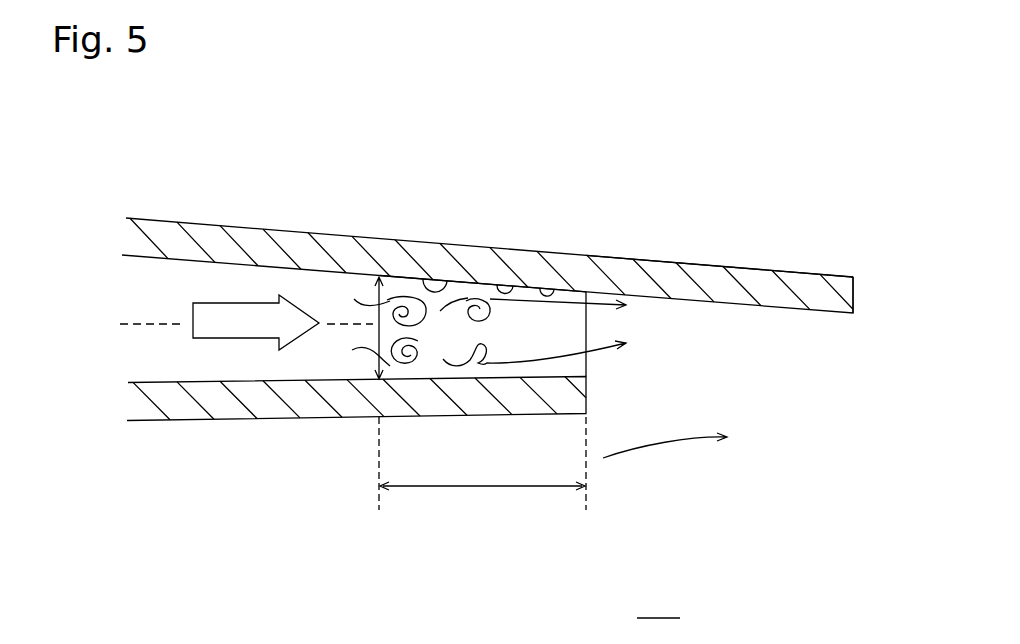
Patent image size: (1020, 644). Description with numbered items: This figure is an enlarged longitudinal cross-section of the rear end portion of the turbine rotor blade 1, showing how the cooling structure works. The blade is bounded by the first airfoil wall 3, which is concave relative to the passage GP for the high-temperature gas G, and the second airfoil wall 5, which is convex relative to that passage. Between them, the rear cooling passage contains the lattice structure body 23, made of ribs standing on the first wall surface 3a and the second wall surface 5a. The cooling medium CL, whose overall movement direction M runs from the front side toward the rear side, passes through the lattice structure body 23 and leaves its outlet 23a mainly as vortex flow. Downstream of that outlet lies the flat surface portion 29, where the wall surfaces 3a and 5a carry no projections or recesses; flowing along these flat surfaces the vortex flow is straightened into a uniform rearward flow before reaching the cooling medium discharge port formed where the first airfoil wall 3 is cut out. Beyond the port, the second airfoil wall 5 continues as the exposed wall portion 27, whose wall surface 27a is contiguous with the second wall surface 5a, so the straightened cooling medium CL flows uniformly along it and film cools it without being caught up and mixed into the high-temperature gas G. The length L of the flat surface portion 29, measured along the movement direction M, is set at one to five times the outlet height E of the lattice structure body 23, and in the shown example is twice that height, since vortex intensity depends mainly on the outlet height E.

The turbine rotor blade 1 is at (174, 191).
The first airfoil wall 3 is at (280, 421).
The first wall surface 3a is at (540, 373).
The second airfoil wall 5 is at (217, 224).
The second wall surface 5a is at (513, 290).
The lattice structure body 23 is at (198, 362).
The outlet of the lattice structure body 23a is at (373, 365).
The exposed wall portion 27 is at (665, 261).
The wall surface of the exposed wall portion 27a is at (820, 313).
The flat surface portion 29 is at (451, 283).
The cooling medium movement direction M is at (249, 304).
The outlet height of the lattice structure body E is at (377, 282).
The cooling medium CL is at (600, 305).
The length of the flat surface portion L is at (477, 485).
The high-temperature gas G is at (653, 445).
The passage for the high-temperature gas GP is at (658, 602).